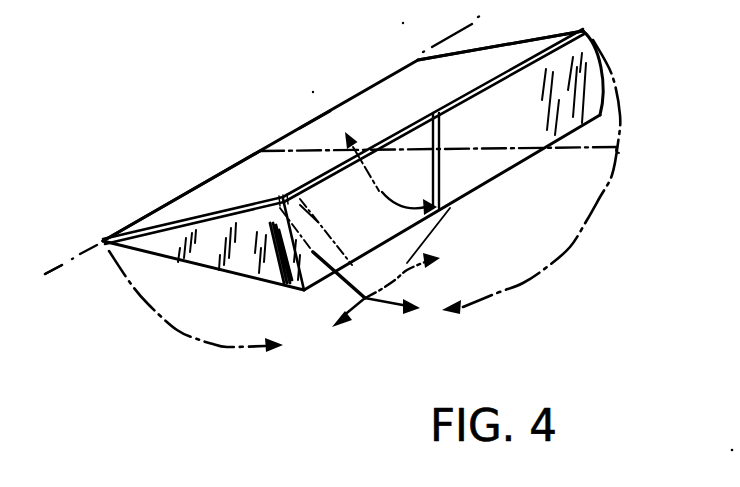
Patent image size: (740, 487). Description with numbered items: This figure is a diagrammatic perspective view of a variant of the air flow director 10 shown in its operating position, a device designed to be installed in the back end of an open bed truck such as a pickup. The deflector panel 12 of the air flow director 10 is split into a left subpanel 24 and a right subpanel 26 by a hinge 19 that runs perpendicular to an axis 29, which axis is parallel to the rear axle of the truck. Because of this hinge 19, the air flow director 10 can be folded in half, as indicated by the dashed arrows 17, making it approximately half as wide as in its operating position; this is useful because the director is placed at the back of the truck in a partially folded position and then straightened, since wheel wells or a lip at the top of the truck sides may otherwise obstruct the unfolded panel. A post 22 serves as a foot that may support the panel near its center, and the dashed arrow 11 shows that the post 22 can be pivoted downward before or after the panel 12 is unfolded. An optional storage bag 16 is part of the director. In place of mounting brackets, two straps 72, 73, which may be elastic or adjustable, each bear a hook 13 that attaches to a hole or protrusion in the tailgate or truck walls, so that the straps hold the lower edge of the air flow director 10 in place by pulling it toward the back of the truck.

The air flow director 10 is at (291, 68).
The dashed arrow 11 is at (391, 173).
The deflector panel 12 is at (254, 90).
The hook 13 is at (620, 146).
The storage bag 16 is at (264, 288).
The dashed arrows 17 is at (197, 338).
The hinge 19 is at (323, 140).
The post 22 is at (441, 178).
The left subpanel 24 is at (248, 166).
The right subpanel 26 is at (300, 131).
The axis 29 is at (81, 261).
The strap 72 is at (318, 233).
The strap 73 is at (481, 147).